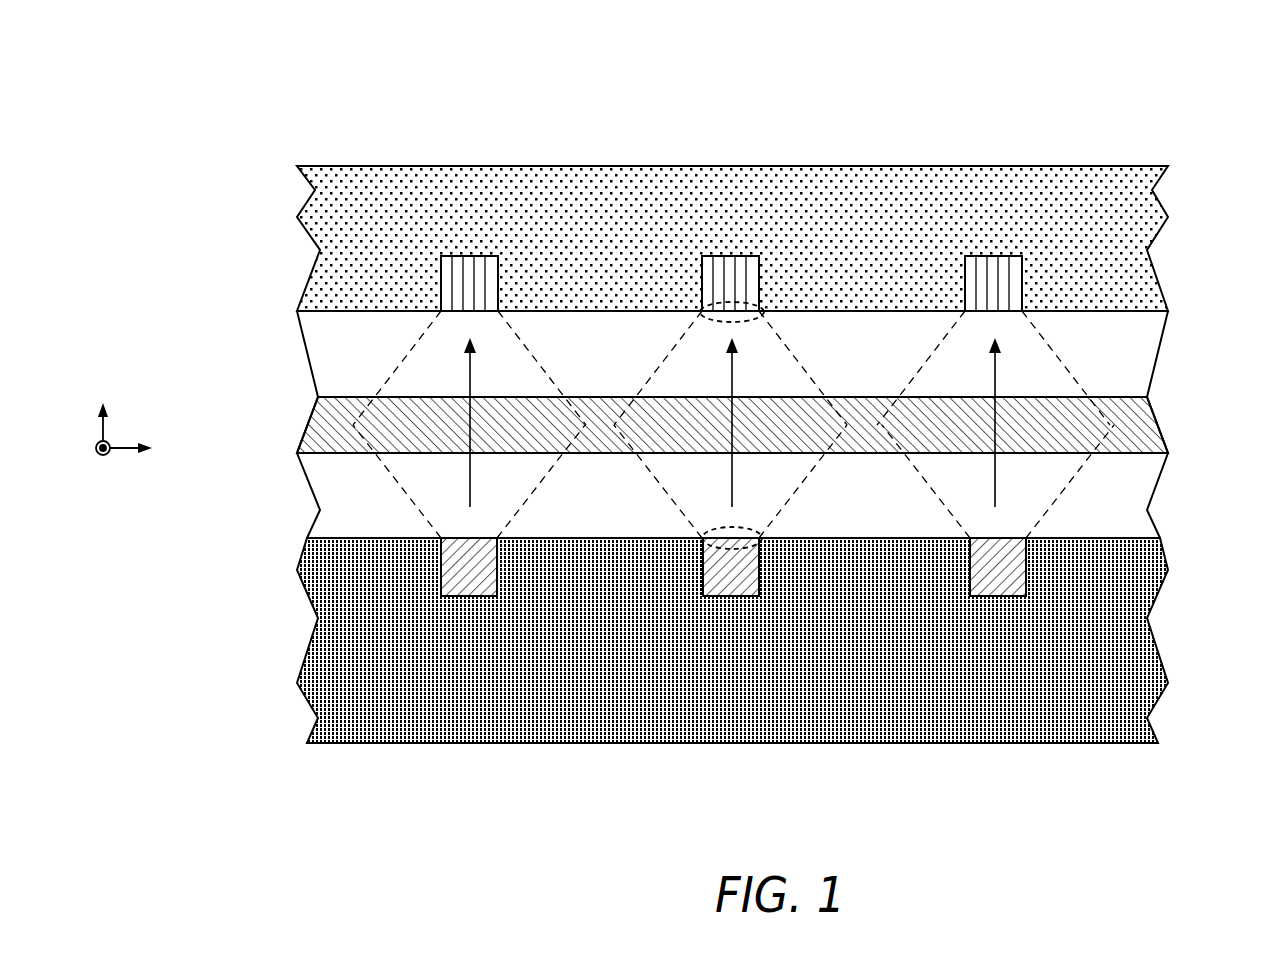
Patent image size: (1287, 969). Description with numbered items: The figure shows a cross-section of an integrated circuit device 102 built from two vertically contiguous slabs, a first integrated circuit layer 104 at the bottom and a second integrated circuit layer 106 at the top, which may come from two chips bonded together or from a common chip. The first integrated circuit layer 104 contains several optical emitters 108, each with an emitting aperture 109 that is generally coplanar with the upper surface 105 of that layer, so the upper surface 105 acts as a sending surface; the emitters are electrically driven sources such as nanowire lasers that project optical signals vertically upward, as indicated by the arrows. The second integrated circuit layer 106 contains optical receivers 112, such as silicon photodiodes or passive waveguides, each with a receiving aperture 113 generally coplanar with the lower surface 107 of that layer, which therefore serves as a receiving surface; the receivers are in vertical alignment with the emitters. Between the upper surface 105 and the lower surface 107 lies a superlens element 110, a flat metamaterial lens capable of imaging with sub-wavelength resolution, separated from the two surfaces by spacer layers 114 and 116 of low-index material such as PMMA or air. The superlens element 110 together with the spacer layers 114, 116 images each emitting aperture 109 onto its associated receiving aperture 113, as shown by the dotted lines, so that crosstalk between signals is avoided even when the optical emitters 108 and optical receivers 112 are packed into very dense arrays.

The integrated circuit device 102 is at (125, 100).
The first integrated circuit layer 104 is at (282, 538).
The upper surface 105 is at (357, 537).
The second integrated circuit layer 106 is at (282, 166).
The lower surface 107 is at (362, 312).
The optical emitters 108 is at (475, 597).
The emitting aperture 109 is at (752, 530).
The superlens element 110 is at (1182, 397).
The optical receivers 112 is at (474, 256).
The receiving aperture 113 is at (743, 322).
The spacer layer 114 is at (1182, 311).
The spacer layer 116 is at (1182, 453).